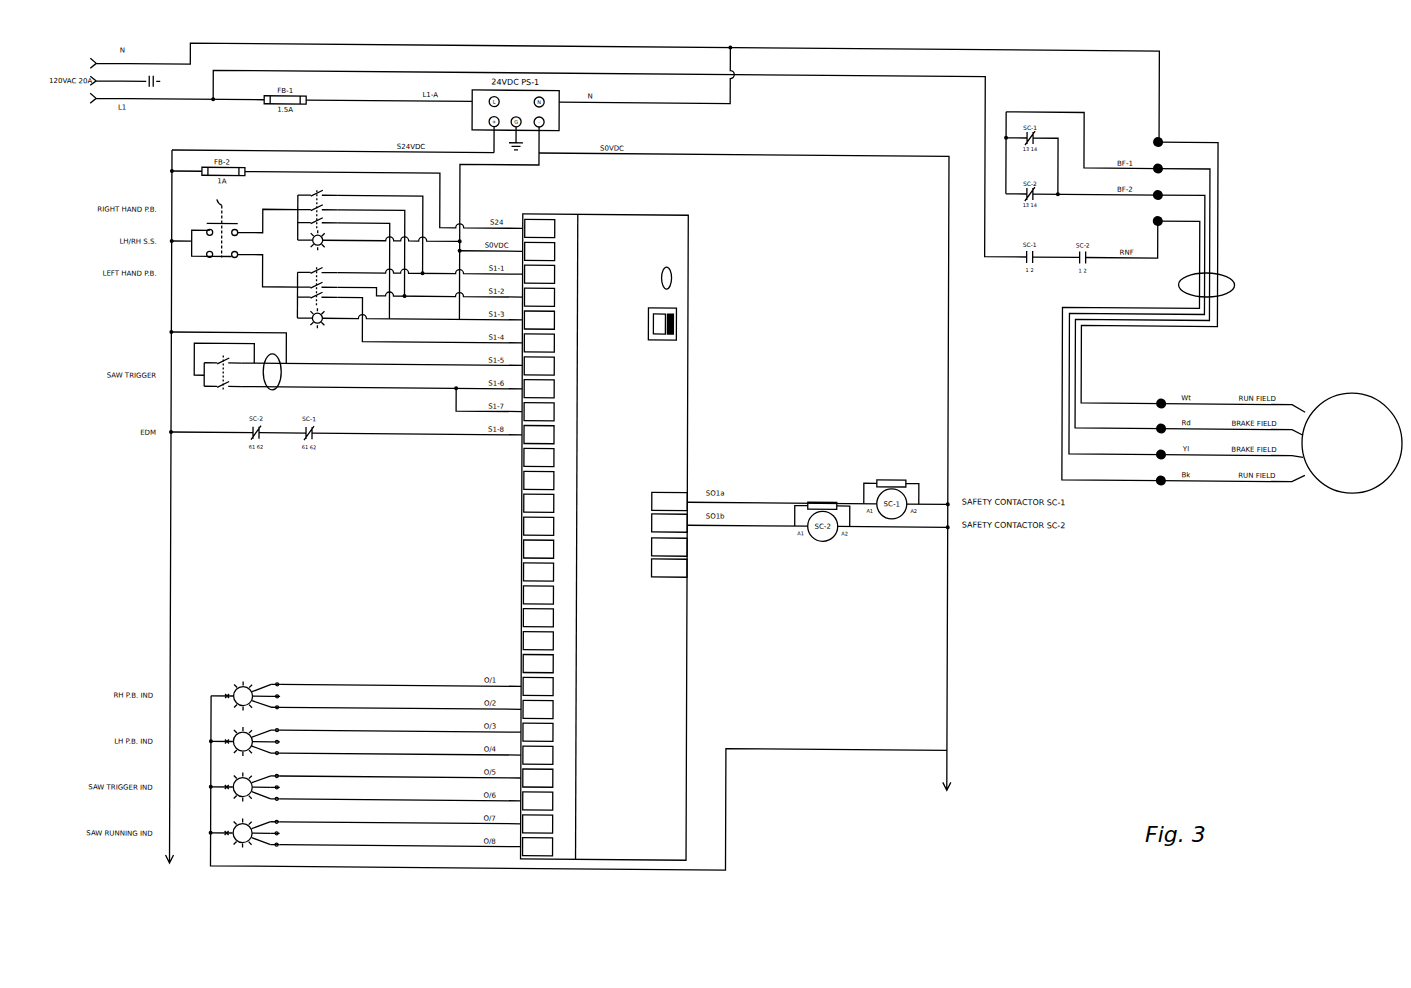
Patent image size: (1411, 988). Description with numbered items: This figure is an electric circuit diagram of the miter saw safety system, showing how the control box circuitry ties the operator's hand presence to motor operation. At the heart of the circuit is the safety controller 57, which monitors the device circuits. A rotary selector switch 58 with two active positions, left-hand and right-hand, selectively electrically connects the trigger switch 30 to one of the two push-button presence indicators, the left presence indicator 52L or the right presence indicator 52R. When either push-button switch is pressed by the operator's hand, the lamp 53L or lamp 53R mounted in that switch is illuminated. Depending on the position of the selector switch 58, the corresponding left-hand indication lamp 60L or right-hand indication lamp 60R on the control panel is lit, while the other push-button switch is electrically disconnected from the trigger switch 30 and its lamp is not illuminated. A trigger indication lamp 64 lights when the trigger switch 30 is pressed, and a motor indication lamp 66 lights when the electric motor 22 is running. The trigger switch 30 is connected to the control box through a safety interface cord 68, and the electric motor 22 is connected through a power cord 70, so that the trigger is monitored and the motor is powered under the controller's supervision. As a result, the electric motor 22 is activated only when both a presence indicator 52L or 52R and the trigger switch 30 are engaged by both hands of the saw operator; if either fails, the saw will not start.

The electric motor 22 is at (1360, 485).
The trigger switch 30 is at (196, 387).
The right presence indicator 52R is at (307, 183).
The lamp 53R is at (326, 243).
The left presence indicator 52L is at (294, 295).
The lamp 53L is at (326, 323).
The safety controller 57 is at (690, 397).
The rotary selector switch 58 is at (199, 266).
The left-hand indication lamp 60L is at (237, 732).
The right-hand indication lamp 60R is at (259, 684).
The trigger indication lamp 64 is at (233, 798).
The motor indication lamp 66 is at (237, 843).
The safety interface cord 68 is at (277, 389).
The power cord 70 is at (1235, 278).